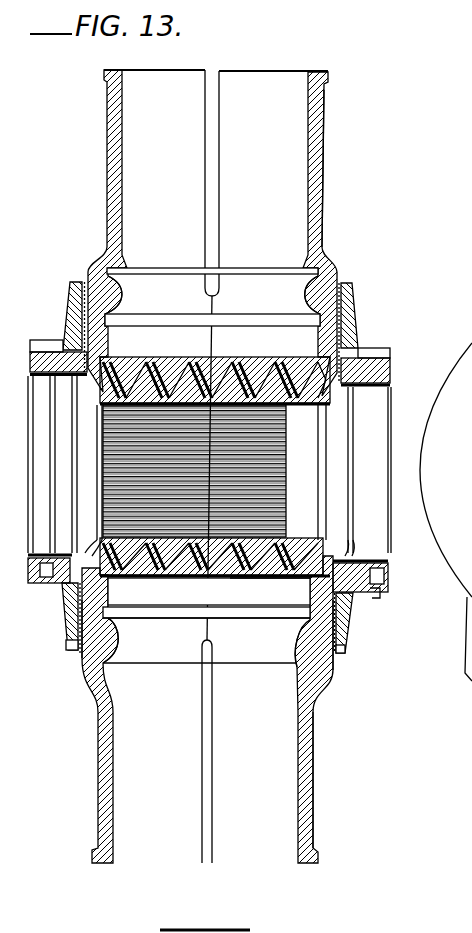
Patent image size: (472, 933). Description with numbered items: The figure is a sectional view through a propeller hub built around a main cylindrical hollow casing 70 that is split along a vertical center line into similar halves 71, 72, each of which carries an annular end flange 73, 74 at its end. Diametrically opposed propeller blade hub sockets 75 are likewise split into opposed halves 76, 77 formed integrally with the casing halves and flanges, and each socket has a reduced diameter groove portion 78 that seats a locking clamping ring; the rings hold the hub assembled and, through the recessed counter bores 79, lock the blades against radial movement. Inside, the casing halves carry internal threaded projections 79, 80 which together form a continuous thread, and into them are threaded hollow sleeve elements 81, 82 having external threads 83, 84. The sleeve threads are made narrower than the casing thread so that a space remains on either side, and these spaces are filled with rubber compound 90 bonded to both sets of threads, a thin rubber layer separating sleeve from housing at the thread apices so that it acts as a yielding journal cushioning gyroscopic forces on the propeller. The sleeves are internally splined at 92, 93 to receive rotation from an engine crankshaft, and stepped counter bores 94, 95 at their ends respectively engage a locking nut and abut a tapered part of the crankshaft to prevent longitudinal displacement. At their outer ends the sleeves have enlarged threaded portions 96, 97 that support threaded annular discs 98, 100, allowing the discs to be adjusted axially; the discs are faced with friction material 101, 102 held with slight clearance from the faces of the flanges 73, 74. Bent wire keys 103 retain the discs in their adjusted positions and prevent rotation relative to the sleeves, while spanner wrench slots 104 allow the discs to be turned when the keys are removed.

The main cylindrical hollow casing 70 is at (176, 619).
The casing half 71 is at (240, 580).
The casing half 72 is at (146, 580).
The annular end flange 73 is at (322, 672).
The annular end flange 74 is at (86, 665).
The propeller blade hub socket 75 is at (218, 68).
The socket half 76 is at (318, 104).
The socket half 77 is at (120, 126).
The reduced diameter groove portion 78 is at (322, 162).
The internal threaded projection 79 is at (125, 305).
The internal threaded projection 80 is at (188, 580).
The hollow sleeve element 81 is at (325, 404).
The hollow sleeve element 82 is at (103, 400).
The external thread 83 is at (167, 372).
The external thread 84 is at (245, 372).
The rubber compound 90 is at (281, 372).
The internal spline 92 is at (284, 434).
The internal spline 93 is at (108, 455).
The stepped counter bore 94 is at (346, 547).
The stepped counter bore 95 is at (68, 540).
The enlarged threaded portion 96 is at (388, 574).
The enlarged threaded portion 97 is at (34, 580).
The threaded annular disc 98 is at (350, 626).
The threaded annular disc 100 is at (62, 624).
The friction material 101 is at (348, 652).
The friction material 102 is at (64, 645).
The bent wire key 103 is at (63, 346).
The spanner wrench slot 104 is at (50, 340).